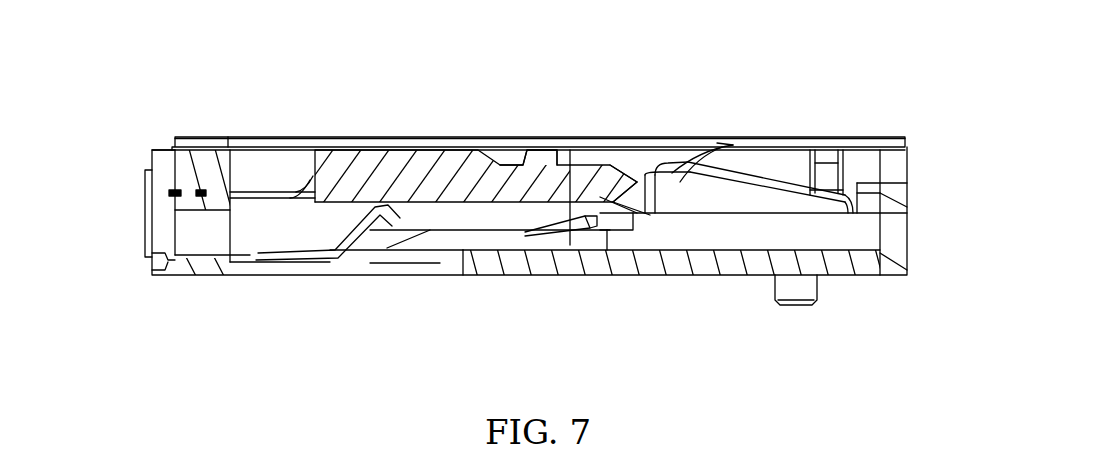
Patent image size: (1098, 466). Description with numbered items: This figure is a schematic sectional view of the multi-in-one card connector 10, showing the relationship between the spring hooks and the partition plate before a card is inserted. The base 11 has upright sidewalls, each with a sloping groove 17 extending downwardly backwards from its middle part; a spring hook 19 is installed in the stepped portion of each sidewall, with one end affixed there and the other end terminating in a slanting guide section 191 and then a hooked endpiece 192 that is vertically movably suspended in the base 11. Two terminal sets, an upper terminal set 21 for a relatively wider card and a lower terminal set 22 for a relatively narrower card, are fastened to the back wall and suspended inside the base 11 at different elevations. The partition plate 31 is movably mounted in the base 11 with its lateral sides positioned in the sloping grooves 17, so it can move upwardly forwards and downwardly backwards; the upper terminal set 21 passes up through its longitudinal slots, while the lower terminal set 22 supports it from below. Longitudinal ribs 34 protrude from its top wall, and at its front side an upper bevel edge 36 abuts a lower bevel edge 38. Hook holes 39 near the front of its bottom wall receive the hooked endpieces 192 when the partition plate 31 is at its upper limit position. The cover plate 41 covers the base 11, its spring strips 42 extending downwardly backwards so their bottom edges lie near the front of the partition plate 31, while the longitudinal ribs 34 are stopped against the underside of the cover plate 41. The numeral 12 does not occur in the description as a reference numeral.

The multi-in-one card connector 10 is at (212, 318).
The base 11 is at (852, 284).
The bottom wall 12 is at (733, 277).
The sloping groove 17 is at (630, 155).
The spring hook 19 is at (751, 175).
The slanting guide section 191 is at (745, 150).
The hooked endpiece 192 is at (572, 240).
The upper terminal set 21 is at (313, 172).
The lower terminal set 22 is at (320, 240).
The partition plate 31 is at (490, 147).
The longitudinal rib 34 is at (538, 147).
The upper bevel edge 36 is at (640, 160).
The lower bevel edge 38 is at (608, 192).
The hook hole 39 is at (571, 150).
The cover plate 41 is at (797, 136).
The spring strip 42 is at (697, 150).